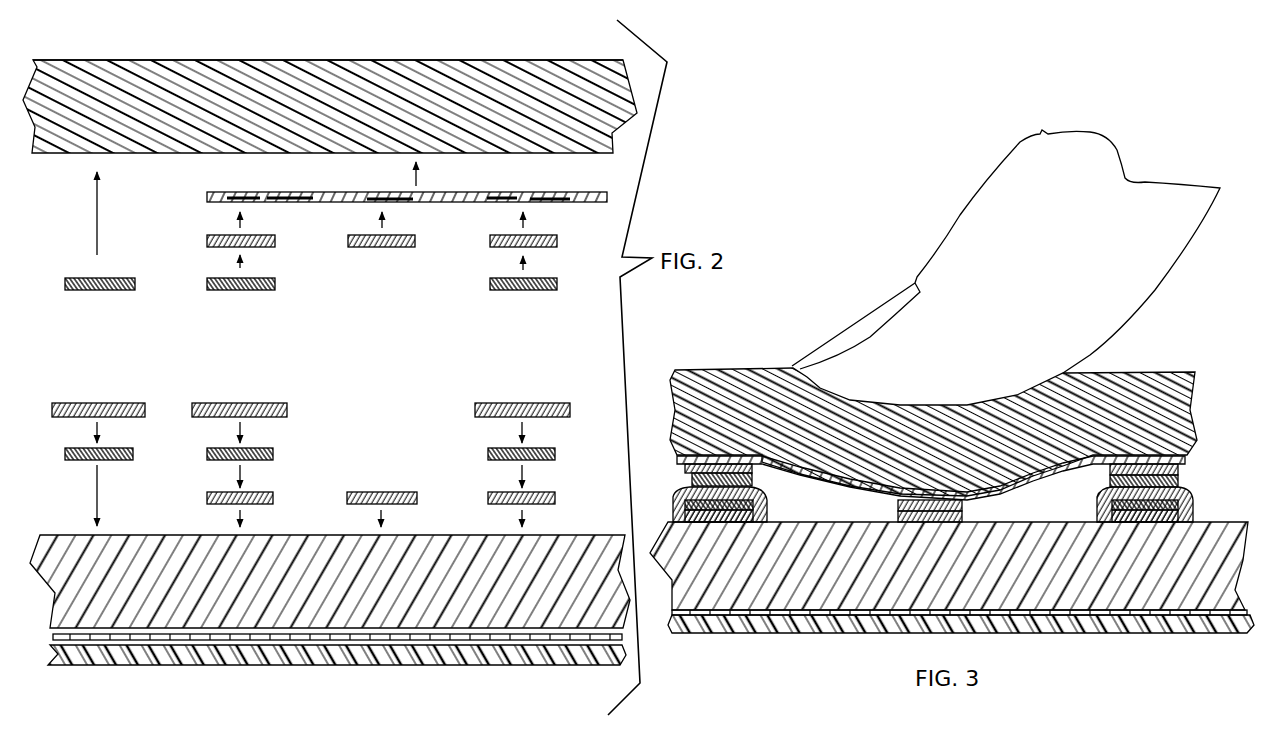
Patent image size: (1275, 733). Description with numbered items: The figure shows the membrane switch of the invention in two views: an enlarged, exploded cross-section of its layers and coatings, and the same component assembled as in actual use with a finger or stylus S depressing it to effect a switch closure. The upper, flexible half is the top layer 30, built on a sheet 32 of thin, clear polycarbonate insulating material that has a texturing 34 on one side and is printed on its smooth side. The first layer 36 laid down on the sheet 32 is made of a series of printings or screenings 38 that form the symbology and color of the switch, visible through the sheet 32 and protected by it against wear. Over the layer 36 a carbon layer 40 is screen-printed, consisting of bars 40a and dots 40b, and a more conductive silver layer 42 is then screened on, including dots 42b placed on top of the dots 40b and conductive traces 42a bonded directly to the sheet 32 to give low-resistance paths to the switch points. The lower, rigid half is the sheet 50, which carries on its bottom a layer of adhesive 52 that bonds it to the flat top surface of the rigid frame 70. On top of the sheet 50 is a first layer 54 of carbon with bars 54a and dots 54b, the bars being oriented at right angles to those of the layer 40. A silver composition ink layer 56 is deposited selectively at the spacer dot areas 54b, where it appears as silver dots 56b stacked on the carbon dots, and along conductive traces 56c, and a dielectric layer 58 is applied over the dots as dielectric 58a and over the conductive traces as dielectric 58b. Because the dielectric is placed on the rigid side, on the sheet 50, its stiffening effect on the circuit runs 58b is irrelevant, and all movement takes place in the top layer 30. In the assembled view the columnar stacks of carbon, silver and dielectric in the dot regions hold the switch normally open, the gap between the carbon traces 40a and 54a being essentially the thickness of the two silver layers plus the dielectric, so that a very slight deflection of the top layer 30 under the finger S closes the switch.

In FIG. 3, the shoe S is at (967, 238).
In FIG. 2, the top layer 30 is at (641, 95).
In FIG. 3, the top layer 30 is at (1202, 384).
In FIG. 2, the sheet of plastic insulating material 32 is at (568, 76).
In FIG. 2, the texturing 34 is at (430, 59).
In FIG. 2, the first layer 36 is at (597, 192).
In FIG. 3, the first layer 36 is at (677, 461).
In FIG. 2, the printings or screenings 38 is at (523, 192).
In FIG. 2, the carbon layer 40 is at (163, 202).
In FIG. 2, the bars 40a is at (393, 247).
In FIG. 3, the bars 40a is at (897, 507).
In FIG. 2, the dots 40b is at (210, 234).
In FIG. 3, the dots 40b is at (762, 457).
In FIG. 2, the more conductive layer 42 is at (65, 265).
In FIG. 2, the conductive traces 42a is at (133, 277).
In FIG. 2, the dots 42b is at (275, 277).
In FIG. 3, the dots 42b is at (688, 483).
In FIG. 2, the lower layer (sheet) 50 is at (565, 531).
In FIG. 3, the lower layer (sheet) 50 is at (1216, 518).
In FIG. 2, the layer of adhesive 52 is at (494, 641).
In FIG. 3, the layer of adhesive 52 is at (717, 616).
In FIG. 2, the first layer of carbon or graphite material 54 is at (205, 505).
In FIG. 2, the bars 54a is at (363, 492).
In FIG. 3, the bars 54a is at (972, 512).
In FIG. 2, the dots 54b is at (297, 508).
In FIG. 3, the dots 54b is at (727, 522).
In FIG. 2, the silver composition ink layer 56 is at (160, 430).
In FIG. 2, the insulating spacer pads 56b is at (273, 459).
In FIG. 3, the insulating spacer pads 56b is at (753, 505).
In FIG. 2, the conductive traces 56c is at (81, 459).
In FIG. 2, the dielectric layer 58 is at (58, 400).
In FIG. 2, the dielectric over dots 58a is at (232, 403).
In FIG. 3, the dielectric over dots 58a is at (684, 508).
In FIG. 2, the dielectric over conductive traces (circuit runs) 58b is at (160, 380).
In FIG. 2, the frame 70 is at (320, 666).
In FIG. 3, the frame 70 is at (750, 626).